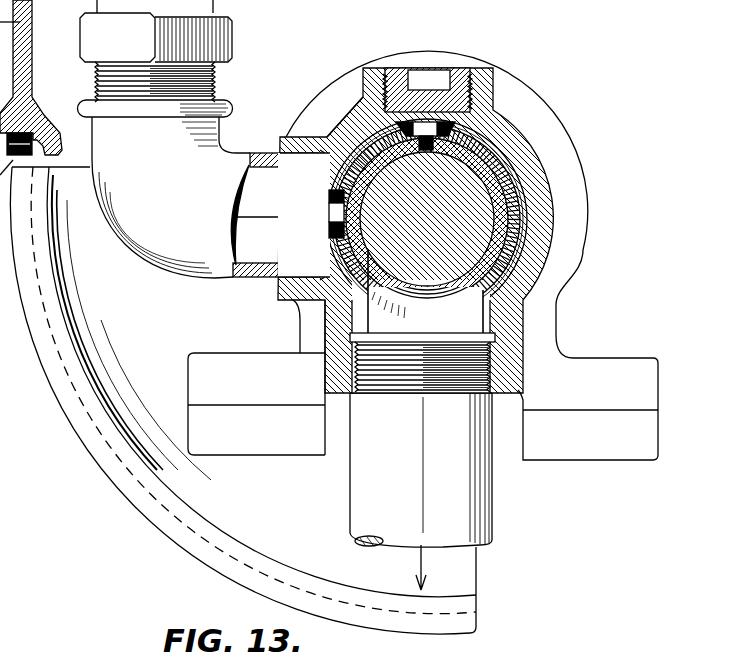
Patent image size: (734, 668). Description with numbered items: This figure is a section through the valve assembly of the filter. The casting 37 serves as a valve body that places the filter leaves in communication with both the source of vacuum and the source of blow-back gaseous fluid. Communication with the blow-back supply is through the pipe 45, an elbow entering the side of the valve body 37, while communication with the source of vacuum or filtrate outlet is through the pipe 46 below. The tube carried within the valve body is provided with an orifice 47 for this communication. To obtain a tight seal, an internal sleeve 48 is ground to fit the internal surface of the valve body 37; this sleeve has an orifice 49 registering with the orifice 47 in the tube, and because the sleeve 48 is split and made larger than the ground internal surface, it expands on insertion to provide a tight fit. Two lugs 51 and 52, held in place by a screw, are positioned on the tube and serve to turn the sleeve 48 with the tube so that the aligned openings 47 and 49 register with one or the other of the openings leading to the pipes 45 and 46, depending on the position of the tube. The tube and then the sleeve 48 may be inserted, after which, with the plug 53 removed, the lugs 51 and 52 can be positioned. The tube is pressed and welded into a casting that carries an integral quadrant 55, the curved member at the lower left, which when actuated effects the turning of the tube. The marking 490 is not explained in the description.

The casting 37 is at (523, 140).
The pipe 45 is at (163, 266).
The pipe 46 is at (492, 495).
The orifice 47 is at (470, 268).
The internal sleeve 48 is at (512, 192).
The orifice 49 is at (524, 307).
The inlet boss 490 is at (340, 123).
The lug 51 is at (458, 126).
The lug 52 is at (330, 247).
The plug 53 is at (463, 70).
The quadrant 55 is at (98, 466).